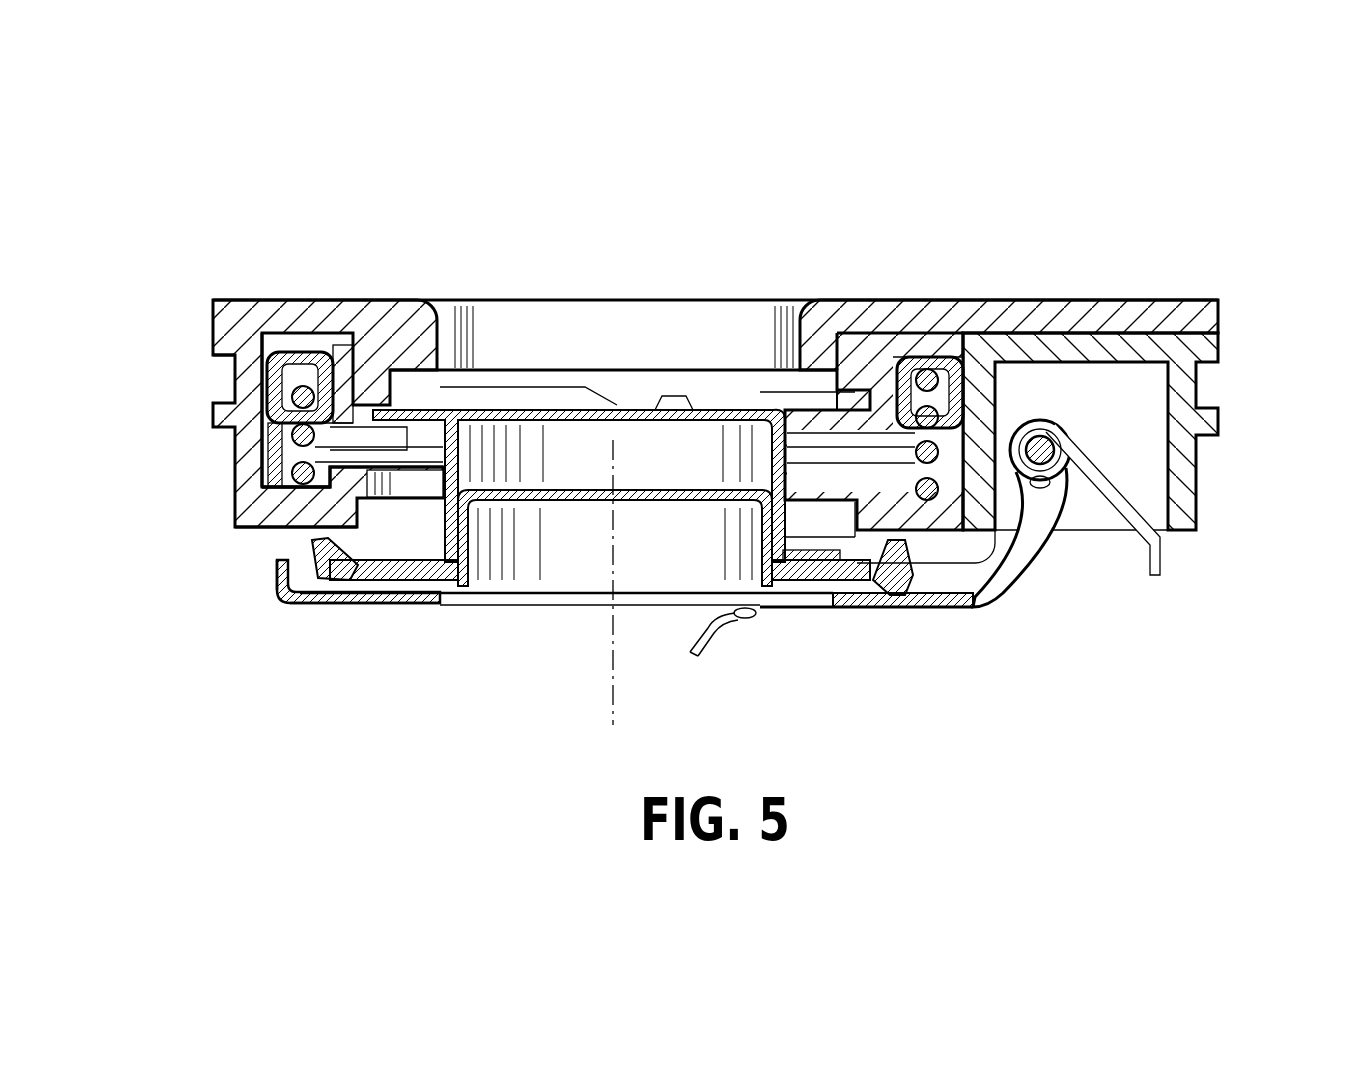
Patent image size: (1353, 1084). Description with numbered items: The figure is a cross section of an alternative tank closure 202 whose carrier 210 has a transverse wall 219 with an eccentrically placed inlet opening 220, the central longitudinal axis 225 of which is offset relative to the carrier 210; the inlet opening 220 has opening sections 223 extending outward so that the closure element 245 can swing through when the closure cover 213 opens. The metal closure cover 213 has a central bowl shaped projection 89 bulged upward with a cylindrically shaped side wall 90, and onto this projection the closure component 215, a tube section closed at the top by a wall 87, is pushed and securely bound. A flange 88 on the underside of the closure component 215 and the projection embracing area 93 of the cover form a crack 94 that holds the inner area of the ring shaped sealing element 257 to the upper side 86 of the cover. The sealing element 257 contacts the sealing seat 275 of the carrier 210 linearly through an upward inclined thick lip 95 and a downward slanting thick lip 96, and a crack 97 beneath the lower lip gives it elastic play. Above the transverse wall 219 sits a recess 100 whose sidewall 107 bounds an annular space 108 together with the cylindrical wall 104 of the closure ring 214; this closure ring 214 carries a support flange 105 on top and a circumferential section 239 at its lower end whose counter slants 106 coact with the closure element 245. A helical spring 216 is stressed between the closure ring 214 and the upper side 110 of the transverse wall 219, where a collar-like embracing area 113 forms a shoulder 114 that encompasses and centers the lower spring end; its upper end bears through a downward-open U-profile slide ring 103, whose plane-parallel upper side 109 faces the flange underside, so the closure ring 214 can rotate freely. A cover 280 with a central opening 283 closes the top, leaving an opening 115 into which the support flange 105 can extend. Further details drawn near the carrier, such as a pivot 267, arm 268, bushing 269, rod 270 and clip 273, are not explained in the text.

The upper side 86 is at (938, 592).
The wall 87 is at (470, 368).
The flange 88 is at (840, 552).
The bowl shaped projection 89 is at (590, 590).
The cylindrically shaped side wall 90 is at (764, 531).
The projection embracing area 93 is at (428, 594).
The crack 94 is at (776, 584).
The thick lip 95 is at (300, 597).
The thick lip 96 is at (323, 592).
The crack 97 is at (362, 590).
The recess 100 is at (262, 478).
The slide ring 103 is at (1010, 335).
The cylindrical wall 104 is at (847, 340).
The support flange 105 is at (343, 350).
The counter slants 106 is at (606, 385).
The sidewall 107 is at (280, 470).
The annular space 108 is at (948, 350).
The upper side 109 is at (300, 338).
The upper side 110 is at (312, 388).
The embracing area 113 is at (830, 394).
The shoulder 114 is at (292, 512).
The opening 115 is at (268, 347).
The tank closure 202 is at (207, 381).
The carrier 210 is at (1202, 511).
The closure cover 213 is at (355, 610).
The closure ring 214 is at (845, 333).
The closure component 215 is at (689, 462).
The helical spring 216 is at (996, 379).
The transverse wall 219 is at (297, 530).
The inlet opening 220 is at (778, 448).
The opening sections 223 is at (465, 537).
The central longitudinal axis 225 is at (610, 712).
The circumferential section 239 is at (532, 395).
The closure element 245 is at (428, 322).
The sealing element 257 is at (843, 590).
The pivot pin 267 is at (1048, 442).
The lever arm 268 is at (1062, 532).
The pivot bushing 269 is at (1047, 434).
The link rod 270 is at (1127, 485).
The clip 273 is at (700, 650).
The sealing seat 275 is at (312, 553).
The cover 280 is at (925, 345).
The central opening 283 is at (778, 340).